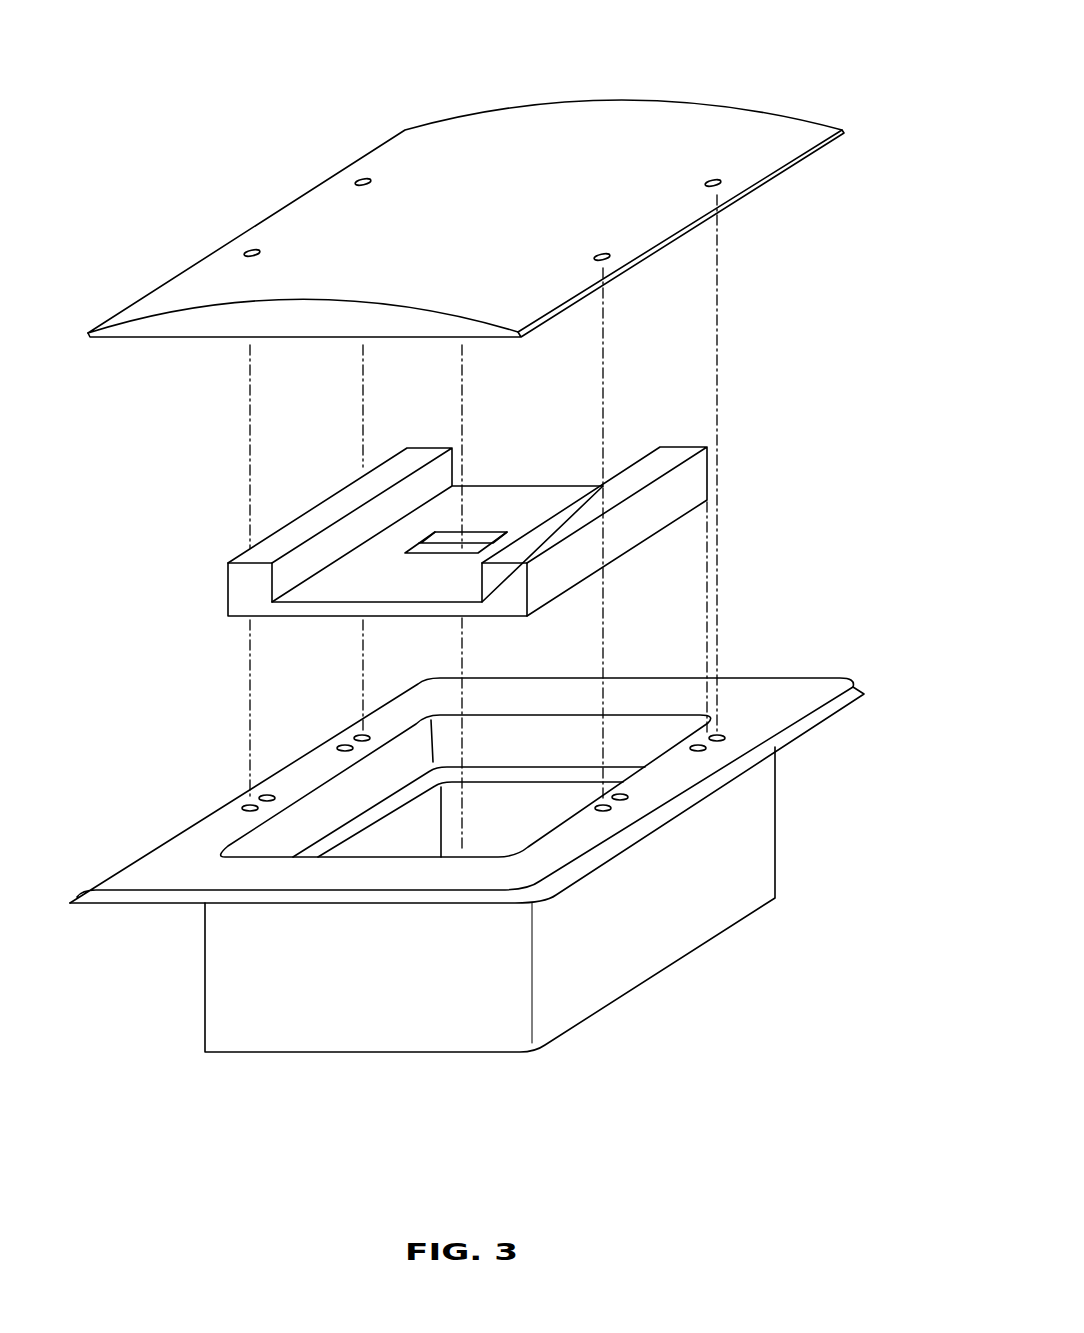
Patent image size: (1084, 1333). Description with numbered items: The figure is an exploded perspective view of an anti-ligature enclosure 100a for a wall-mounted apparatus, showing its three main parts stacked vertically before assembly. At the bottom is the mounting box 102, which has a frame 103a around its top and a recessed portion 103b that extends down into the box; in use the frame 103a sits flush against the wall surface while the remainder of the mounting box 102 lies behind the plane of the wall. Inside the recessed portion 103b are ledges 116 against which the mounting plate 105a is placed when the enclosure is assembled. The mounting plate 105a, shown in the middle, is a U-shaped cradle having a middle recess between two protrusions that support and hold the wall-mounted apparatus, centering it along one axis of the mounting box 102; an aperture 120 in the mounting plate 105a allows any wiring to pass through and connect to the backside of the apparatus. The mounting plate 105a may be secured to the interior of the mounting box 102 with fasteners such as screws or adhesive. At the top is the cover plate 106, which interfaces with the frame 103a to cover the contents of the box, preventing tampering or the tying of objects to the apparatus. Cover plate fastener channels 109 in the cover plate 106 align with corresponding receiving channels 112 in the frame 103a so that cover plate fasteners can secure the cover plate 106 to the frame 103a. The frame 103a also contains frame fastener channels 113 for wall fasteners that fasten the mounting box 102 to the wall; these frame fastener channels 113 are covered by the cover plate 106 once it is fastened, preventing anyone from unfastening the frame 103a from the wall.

The anti-ligature enclosure 100a is at (744, 62).
The mounting box 102 is at (203, 1018).
The frame 103a is at (790, 700).
The recessed portion 103b is at (548, 800).
The mounting plate 105a is at (300, 517).
The cover plate 106 is at (402, 131).
The cover plate fastener channels 109 is at (355, 180).
The receiving channels 112 is at (360, 733).
The frame fastener channels 113 is at (339, 745).
The ledges 116 is at (527, 772).
The aperture 120 is at (480, 519).